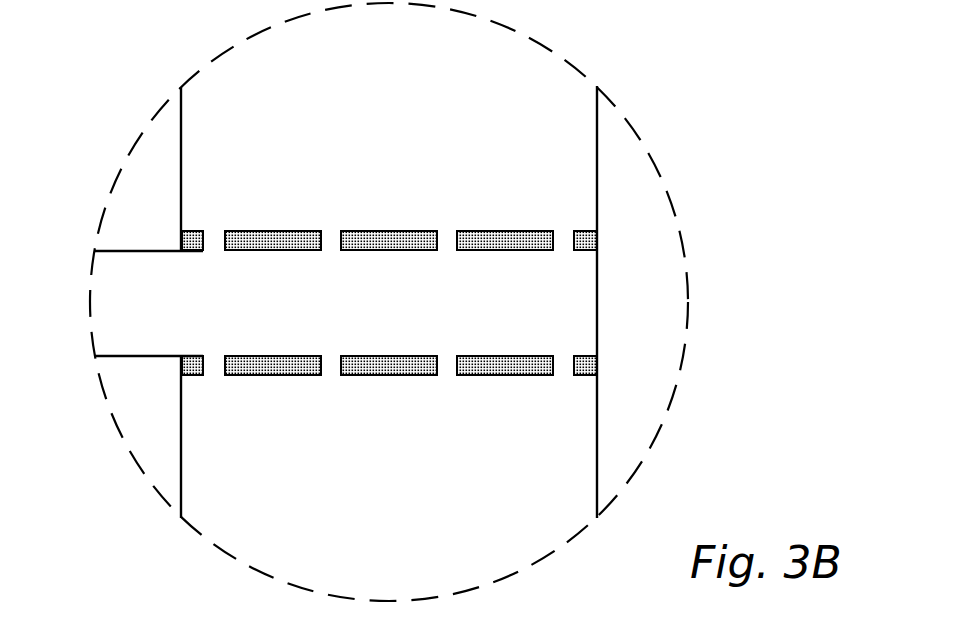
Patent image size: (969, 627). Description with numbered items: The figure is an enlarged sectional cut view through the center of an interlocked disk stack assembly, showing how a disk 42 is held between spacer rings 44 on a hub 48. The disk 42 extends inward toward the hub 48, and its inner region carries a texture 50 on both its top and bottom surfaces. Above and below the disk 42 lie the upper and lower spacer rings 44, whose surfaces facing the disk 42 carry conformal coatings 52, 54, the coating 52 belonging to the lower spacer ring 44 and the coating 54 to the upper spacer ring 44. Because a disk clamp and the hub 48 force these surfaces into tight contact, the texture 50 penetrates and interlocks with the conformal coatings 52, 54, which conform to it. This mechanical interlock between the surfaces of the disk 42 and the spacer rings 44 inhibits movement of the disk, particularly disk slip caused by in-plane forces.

The disk 42 is at (110, 325).
The spacer ring 44 is at (533, 60).
The hub 48 is at (640, 180).
The texture 50 is at (215, 252).
The conformal coating 52 is at (198, 369).
The conformal coating 54 is at (198, 237).